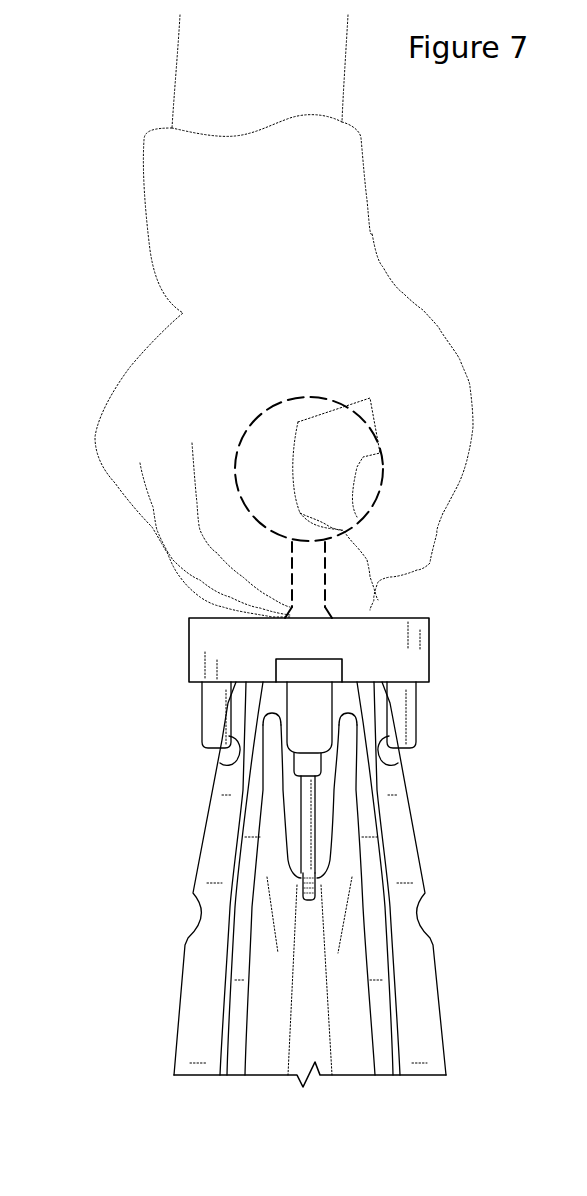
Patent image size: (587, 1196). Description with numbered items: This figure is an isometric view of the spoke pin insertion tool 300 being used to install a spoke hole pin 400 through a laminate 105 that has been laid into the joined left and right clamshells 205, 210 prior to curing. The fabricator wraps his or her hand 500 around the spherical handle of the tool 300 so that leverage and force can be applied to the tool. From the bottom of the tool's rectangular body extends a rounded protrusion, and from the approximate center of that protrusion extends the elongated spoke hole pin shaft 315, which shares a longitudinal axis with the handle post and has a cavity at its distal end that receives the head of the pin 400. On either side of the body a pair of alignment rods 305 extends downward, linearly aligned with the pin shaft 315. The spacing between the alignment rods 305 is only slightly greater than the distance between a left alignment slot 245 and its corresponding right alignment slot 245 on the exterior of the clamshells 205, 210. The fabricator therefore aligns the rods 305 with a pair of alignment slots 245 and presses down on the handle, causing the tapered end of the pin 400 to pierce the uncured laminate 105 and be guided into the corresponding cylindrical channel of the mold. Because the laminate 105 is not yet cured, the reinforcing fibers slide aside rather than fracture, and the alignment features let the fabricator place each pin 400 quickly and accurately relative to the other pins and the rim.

The hand 500 is at (393, 208).
The spoke pin insertion tool 300 is at (420, 625).
The alignment rods 305 is at (212, 707).
The spoke hole pin shaft 315 is at (307, 815).
The spoke hole pin 400 is at (303, 883).
The left clamshell 205 is at (193, 1012).
The right clamshell 210 is at (413, 828).
The alignment slots 245 is at (217, 765).
The laminate 105 is at (312, 978).